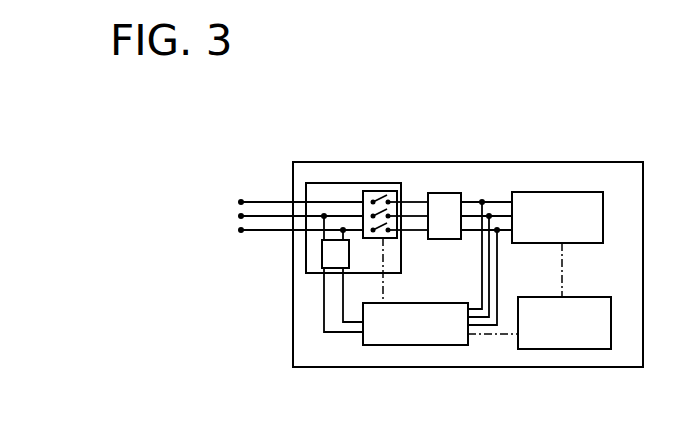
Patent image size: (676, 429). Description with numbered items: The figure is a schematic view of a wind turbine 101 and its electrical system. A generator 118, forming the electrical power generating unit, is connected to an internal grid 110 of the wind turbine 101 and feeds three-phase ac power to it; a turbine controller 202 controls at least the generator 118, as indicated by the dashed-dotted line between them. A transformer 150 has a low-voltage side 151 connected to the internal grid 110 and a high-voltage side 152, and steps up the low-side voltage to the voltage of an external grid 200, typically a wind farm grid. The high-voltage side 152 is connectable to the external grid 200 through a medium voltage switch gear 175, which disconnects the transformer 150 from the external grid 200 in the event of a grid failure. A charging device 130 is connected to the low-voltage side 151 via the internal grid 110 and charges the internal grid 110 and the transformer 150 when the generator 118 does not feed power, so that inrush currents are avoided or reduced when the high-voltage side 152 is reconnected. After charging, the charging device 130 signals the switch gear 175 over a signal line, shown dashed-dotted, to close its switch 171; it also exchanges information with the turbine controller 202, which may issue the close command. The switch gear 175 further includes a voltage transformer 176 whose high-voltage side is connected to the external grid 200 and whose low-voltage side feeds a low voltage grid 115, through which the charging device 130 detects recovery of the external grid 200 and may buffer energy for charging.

The wind turbine 101 is at (603, 96).
The external grid 200 is at (255, 188).
The medium voltage switch gear 175 is at (318, 173).
The switch 171 is at (375, 197).
The voltage transformer 176 is at (333, 262).
The high-voltage side 152 is at (422, 192).
The transformer 150 is at (442, 222).
The low-voltage side 151 is at (465, 190).
The internal grid 110 is at (497, 190).
The generator 118 is at (578, 230).
The charging device 130 is at (426, 336).
The turbine controller 202 is at (584, 336).
The low voltage grid 115 is at (343, 335).